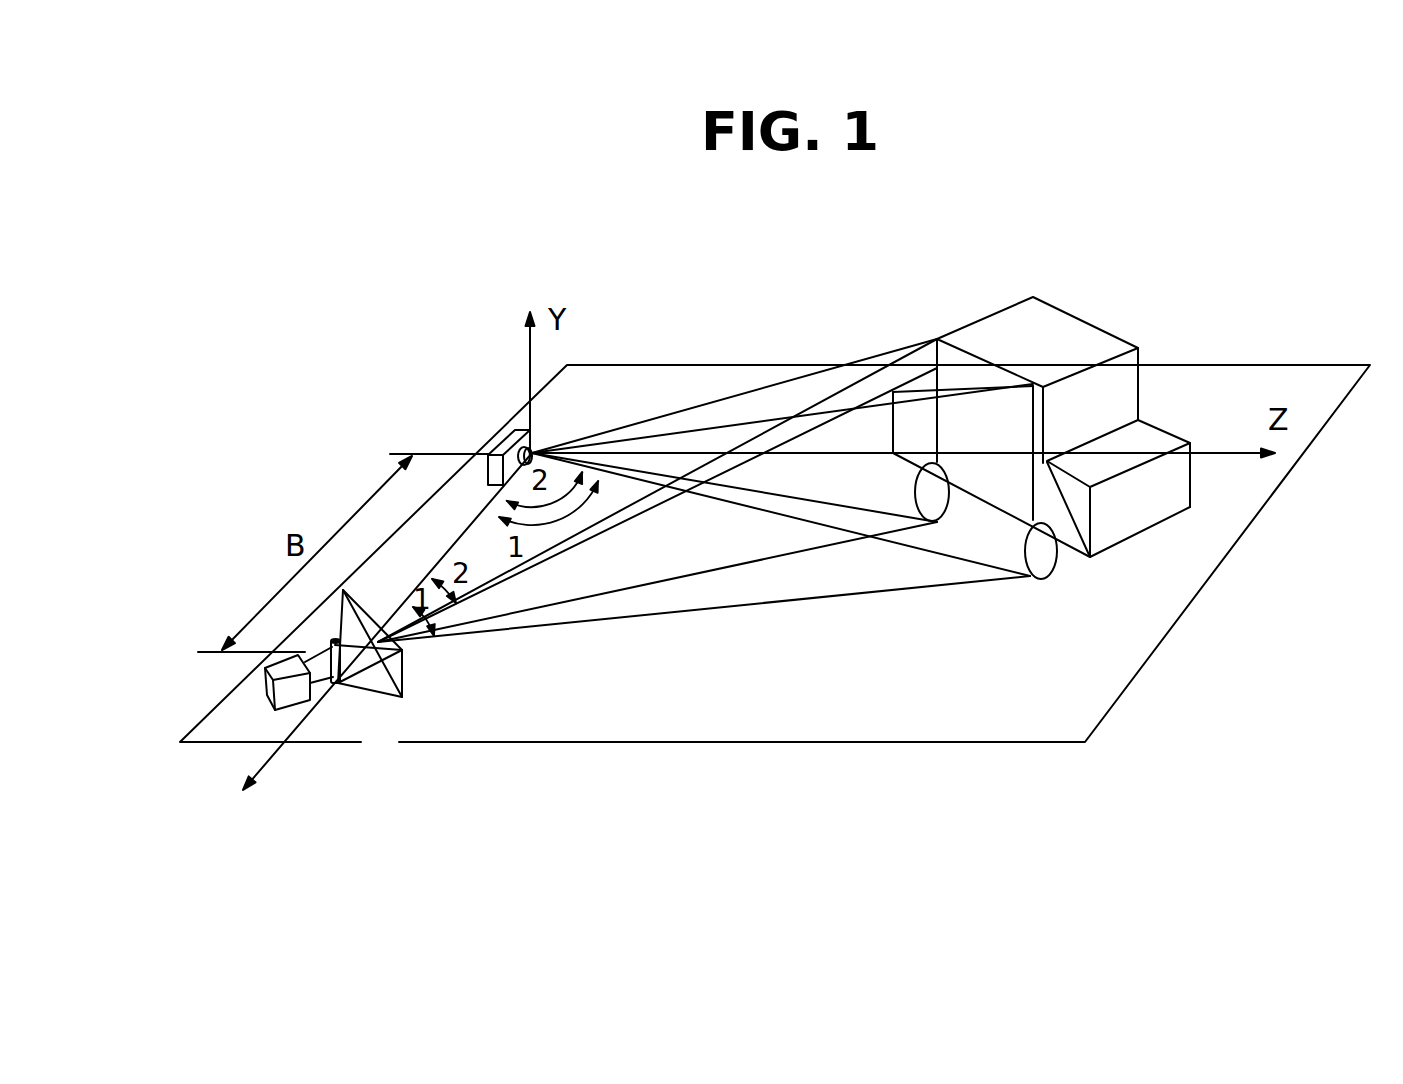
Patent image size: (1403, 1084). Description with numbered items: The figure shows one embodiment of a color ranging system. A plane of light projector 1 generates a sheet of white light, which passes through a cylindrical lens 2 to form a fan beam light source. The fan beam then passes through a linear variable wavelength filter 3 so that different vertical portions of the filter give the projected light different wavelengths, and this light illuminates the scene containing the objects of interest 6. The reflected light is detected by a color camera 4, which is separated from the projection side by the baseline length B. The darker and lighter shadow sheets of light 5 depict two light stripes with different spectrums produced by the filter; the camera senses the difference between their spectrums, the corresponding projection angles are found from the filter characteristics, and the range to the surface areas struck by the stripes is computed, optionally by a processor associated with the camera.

The plane of light projector 1 is at (281, 691).
The cylindrical lens 2 is at (775, 560).
The linear variable wavelength filter 3 is at (388, 646).
The color camera 4 is at (485, 450).
The darker and lighter shadow sheets of light 5 is at (937, 339).
The objects of interest 6 is at (1041, 427).